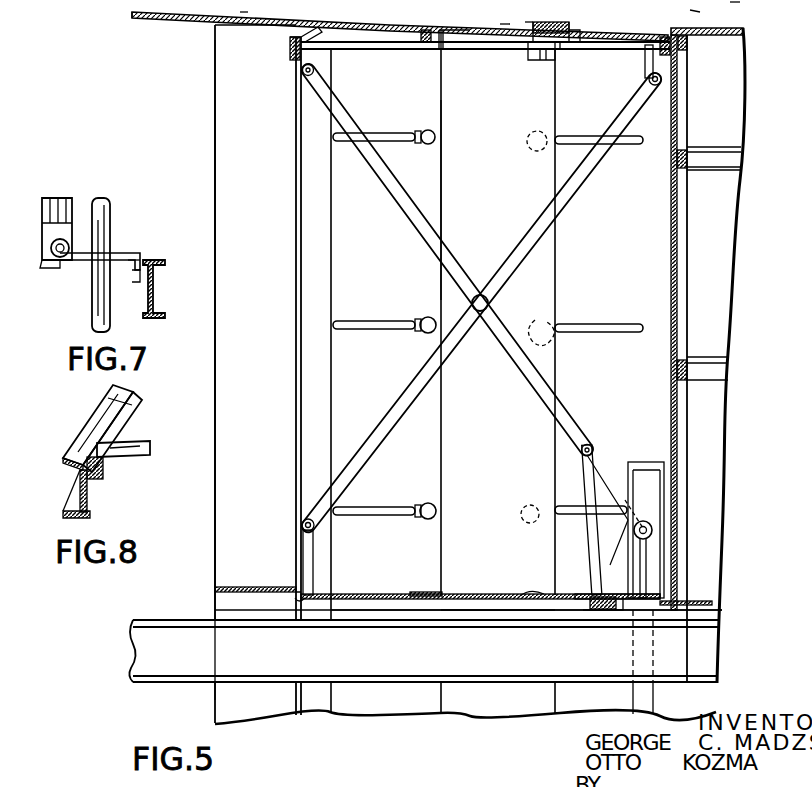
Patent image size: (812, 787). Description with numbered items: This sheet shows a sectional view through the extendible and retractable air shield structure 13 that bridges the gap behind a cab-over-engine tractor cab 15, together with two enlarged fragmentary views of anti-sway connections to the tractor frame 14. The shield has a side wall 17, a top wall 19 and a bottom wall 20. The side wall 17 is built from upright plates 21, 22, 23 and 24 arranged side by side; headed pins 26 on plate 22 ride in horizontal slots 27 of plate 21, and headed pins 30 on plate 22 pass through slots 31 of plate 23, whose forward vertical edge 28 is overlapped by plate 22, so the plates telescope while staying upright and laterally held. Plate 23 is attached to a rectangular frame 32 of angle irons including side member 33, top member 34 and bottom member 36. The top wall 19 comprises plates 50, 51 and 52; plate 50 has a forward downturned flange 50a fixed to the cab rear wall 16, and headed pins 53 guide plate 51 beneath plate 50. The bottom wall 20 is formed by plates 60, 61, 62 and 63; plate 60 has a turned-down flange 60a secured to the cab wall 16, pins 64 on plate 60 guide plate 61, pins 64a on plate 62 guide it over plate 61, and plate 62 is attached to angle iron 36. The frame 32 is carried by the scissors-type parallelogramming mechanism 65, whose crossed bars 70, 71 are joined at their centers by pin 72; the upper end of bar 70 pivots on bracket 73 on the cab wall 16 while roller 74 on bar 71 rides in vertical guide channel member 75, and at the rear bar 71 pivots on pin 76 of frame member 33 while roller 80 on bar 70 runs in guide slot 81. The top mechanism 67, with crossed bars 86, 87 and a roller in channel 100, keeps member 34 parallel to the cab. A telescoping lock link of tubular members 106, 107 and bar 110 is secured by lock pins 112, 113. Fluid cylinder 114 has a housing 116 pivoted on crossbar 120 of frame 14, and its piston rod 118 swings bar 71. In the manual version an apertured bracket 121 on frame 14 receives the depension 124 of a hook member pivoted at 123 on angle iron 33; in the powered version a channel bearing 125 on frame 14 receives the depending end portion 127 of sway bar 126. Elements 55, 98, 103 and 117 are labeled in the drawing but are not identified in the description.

In FIG. 5, the air shield structure 13 is at (232, 143).
In FIG. 5, the frame 14 is at (363, 659).
In FIG. 7, the frame 14 is at (146, 306).
In FIG. 8, the frame 14 is at (92, 486).
In FIG. 5, the cab 15 is at (730, 102).
In FIG. 5, the rear wall of the cab 16 is at (670, 224).
In FIG. 5, the side wall 17 is at (390, 96).
In FIG. 7, the side wall 17 is at (40, 248).
In FIG. 5, the top wall 19 is at (258, 14).
In FIG. 5, the bottom wall 20 is at (506, 616).
In FIG. 5, the plate 21 is at (620, 233).
In FIG. 5, the plate 22 is at (506, 201).
In FIG. 5, the plate 23 is at (381, 226).
In FIG. 5, the plate 24 is at (264, 194).
In FIG. 5, the headed pins 26 is at (536, 132).
In FIG. 5, the slots 27 is at (586, 138).
In FIG. 5, the forward vertical edge 28 is at (444, 154).
In FIG. 5, the headed pins 30 is at (434, 130).
In FIG. 5, the slots 31 is at (386, 134).
In FIG. 5, the rectangular frame 32 is at (290, 289).
In FIG. 5, the angle iron 33 is at (320, 376).
In FIG. 7, the angle iron 33 is at (66, 214).
In FIG. 5, the angle iron 34 is at (290, 47).
In FIG. 5, the angle iron 36 is at (288, 605).
In FIG. 5, the plate 50 is at (648, 48).
In FIG. 5, the forward downturned flange 50a is at (687, 55).
In FIG. 5, the plate 51 is at (478, 48).
In FIG. 5, the plate 52 is at (182, 26).
In FIG. 5, the headed pins 53 is at (568, 52).
In FIG. 5, the header plate 55 is at (442, 56).
In FIG. 5, the plate 60 is at (588, 612).
In FIG. 5, the turned down flange portion 60a is at (712, 608).
In FIG. 5, the plate 61 is at (470, 609).
In FIG. 5, the plate 62 is at (368, 599).
In FIG. 5, the plate 63 is at (252, 584).
In FIG. 5, the headed pins 64 is at (532, 594).
In FIG. 5, the pins 64a is at (422, 605).
In FIG. 5, the parallelogramming mechanism 65 is at (516, 258).
In FIG. 5, the parallelogramming mechanism 67 is at (428, 56).
In FIG. 5, the crossed bar 70 is at (448, 354).
In FIG. 5, the crossed bar 71 is at (502, 328).
In FIG. 5, the pin 72 is at (478, 292).
In FIG. 5, the bracket 73 is at (664, 86).
In FIG. 5, the roller 74 is at (645, 530).
In FIG. 5, the vertical guide channel member 75 is at (649, 482).
In FIG. 5, the pin 76 is at (302, 74).
In FIG. 5, the roller 80 is at (302, 518).
In FIG. 5, the guide slot 81 is at (315, 552).
In FIG. 5, the crossed bar 86 is at (496, 48).
In FIG. 5, the crossed bar 87 is at (369, 52).
In FIG. 5, the latch bracket 98 is at (533, 56).
In FIG. 5, the channel 100 is at (542, 62).
In FIG. 5, the roof connector 103 is at (751, 5).
In FIG. 5, the tubular member 106 is at (606, 10).
In FIG. 5, the tubular member 107 is at (480, 2).
In FIG. 5, the bar 110 is at (400, 14).
In FIG. 5, the lock pin 112 is at (550, 11).
In FIG. 5, the lock pin 113 is at (432, 4).
In FIG. 5, the fluid cylinder 114 is at (590, 575).
In FIG. 5, the cylinder housing 116 is at (597, 570).
In FIG. 5, the rod foot 117 is at (608, 622).
In FIG. 5, the piston rod 118 is at (590, 470).
In FIG. 5, the crossbar 120 is at (600, 660).
In FIG. 7, the apertured bracket 121 is at (142, 258).
In FIG. 7, the pivot 123 is at (62, 258).
In FIG. 7, the depension 124 is at (136, 272).
In FIG. 8, the channel bearing 125 is at (104, 408).
In FIG. 8, the shield guide and sway preventing bar 126 is at (144, 446).
In FIG. 8, the depending end portion 127 is at (112, 460).